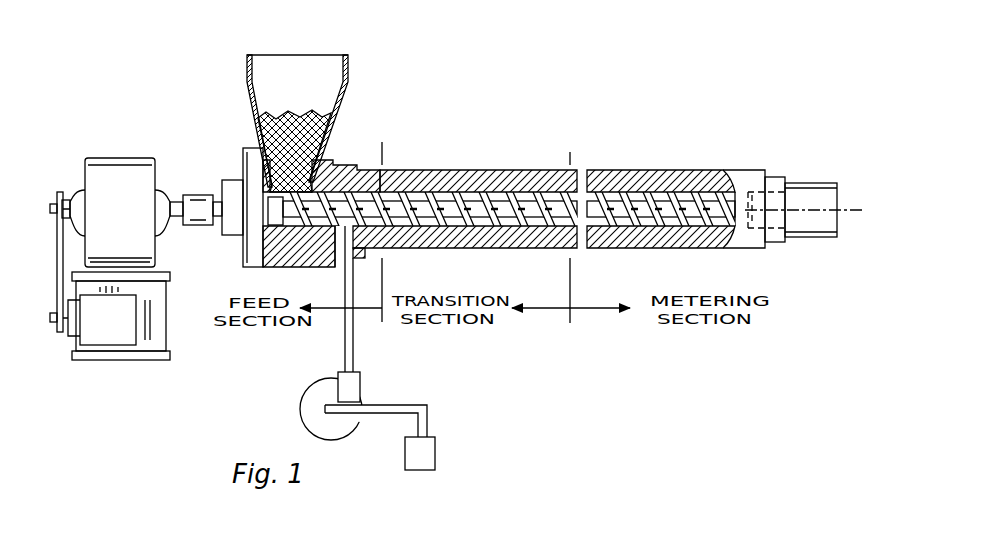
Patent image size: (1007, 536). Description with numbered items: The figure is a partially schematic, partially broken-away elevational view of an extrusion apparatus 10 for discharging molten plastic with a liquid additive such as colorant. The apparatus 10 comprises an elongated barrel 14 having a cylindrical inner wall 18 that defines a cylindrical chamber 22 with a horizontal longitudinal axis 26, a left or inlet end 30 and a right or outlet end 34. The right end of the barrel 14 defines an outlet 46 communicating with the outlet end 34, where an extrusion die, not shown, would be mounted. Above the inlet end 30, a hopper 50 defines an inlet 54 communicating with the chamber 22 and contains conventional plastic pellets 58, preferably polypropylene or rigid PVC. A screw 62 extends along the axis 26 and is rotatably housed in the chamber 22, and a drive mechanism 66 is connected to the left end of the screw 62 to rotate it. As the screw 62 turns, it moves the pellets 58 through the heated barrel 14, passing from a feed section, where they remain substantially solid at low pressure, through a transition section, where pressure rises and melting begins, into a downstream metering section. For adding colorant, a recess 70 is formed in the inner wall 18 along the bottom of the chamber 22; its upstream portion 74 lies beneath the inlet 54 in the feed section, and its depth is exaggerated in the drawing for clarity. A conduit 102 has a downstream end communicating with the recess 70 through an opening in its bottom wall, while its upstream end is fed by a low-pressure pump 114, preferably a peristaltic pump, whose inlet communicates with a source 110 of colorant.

The extrusion apparatus 10 is at (537, 249).
The barrel 14 is at (465, 178).
The cylindrical inner wall 18 is at (685, 200).
The cylindrical chamber 22 is at (646, 194).
The horizontal longitudinal axis 26 is at (846, 210).
The inlet end 30 is at (359, 121).
The outlet end 34 is at (791, 152).
The outlet 46 is at (753, 176).
The hopper 50 is at (247, 63).
The inlet 54 is at (273, 142).
The plastic pellets 58 is at (296, 112).
The screw 62 is at (543, 192).
The drive mechanism 66 is at (104, 156).
The recess 70 is at (381, 248).
The upstream portion 74 is at (243, 267).
The conduit 102 is at (345, 337).
The source of colorant 110 is at (428, 458).
The low-pressure pump 114 is at (316, 397).